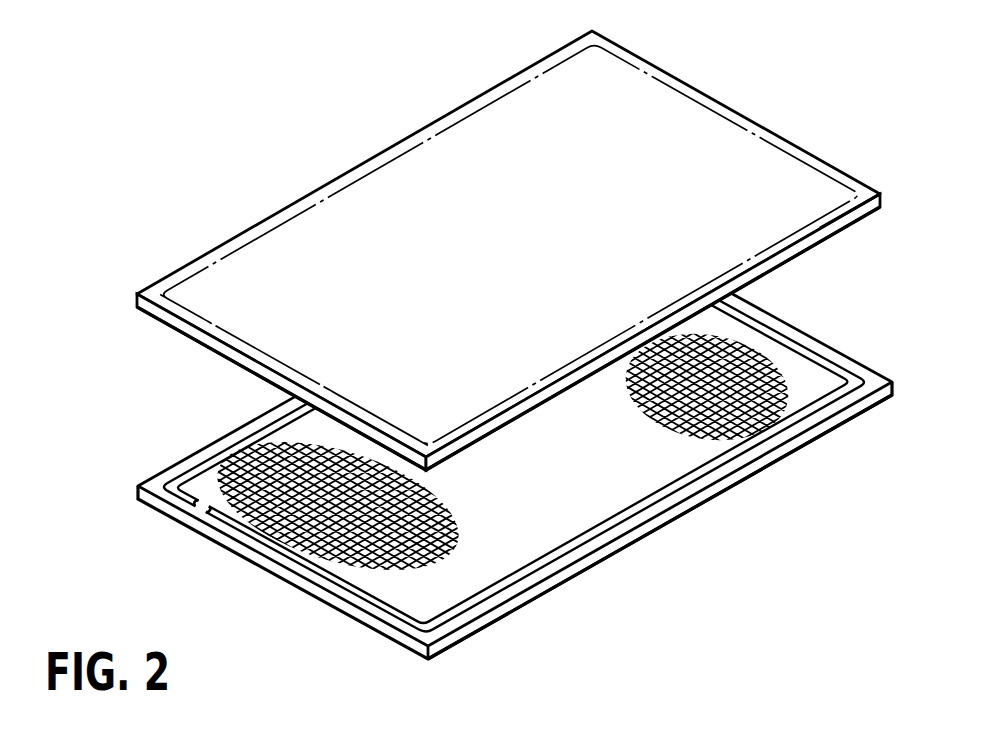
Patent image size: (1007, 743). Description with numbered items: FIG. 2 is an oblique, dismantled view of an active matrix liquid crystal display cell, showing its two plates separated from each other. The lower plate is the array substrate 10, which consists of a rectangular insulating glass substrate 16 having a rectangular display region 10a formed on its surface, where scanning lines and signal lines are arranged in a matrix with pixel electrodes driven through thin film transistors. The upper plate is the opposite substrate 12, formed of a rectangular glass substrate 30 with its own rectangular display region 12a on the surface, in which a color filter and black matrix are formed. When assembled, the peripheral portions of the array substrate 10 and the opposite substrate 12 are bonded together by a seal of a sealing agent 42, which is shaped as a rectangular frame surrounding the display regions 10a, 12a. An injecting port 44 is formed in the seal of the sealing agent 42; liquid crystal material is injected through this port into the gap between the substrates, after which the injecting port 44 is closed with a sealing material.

The array substrate 10 is at (770, 445).
The display region 10a is at (583, 518).
The opposite substrate 12 is at (771, 181).
The display region 12a is at (440, 147).
The glass substrate 16 is at (684, 515).
The glass substrate 30 is at (847, 176).
The sealing agent 42 is at (308, 578).
The injecting port 44 is at (190, 520).